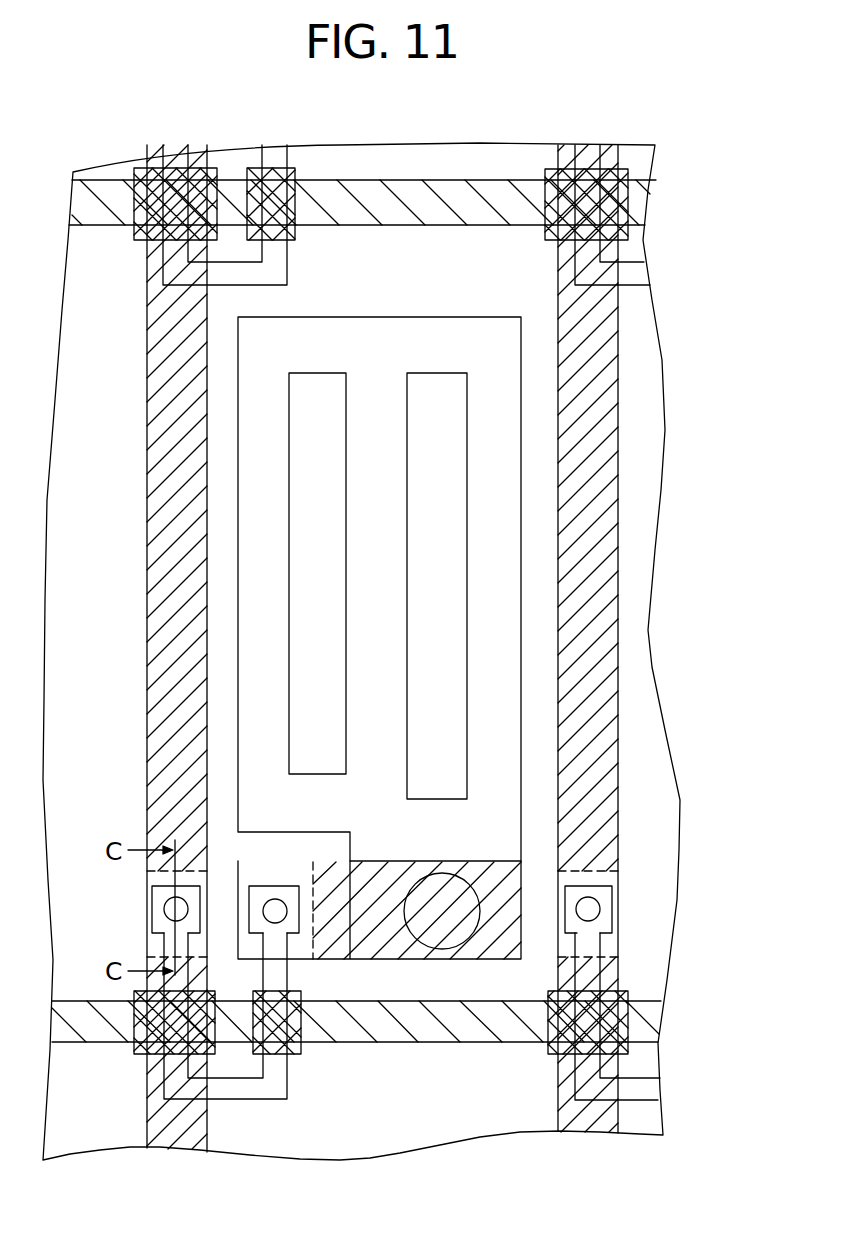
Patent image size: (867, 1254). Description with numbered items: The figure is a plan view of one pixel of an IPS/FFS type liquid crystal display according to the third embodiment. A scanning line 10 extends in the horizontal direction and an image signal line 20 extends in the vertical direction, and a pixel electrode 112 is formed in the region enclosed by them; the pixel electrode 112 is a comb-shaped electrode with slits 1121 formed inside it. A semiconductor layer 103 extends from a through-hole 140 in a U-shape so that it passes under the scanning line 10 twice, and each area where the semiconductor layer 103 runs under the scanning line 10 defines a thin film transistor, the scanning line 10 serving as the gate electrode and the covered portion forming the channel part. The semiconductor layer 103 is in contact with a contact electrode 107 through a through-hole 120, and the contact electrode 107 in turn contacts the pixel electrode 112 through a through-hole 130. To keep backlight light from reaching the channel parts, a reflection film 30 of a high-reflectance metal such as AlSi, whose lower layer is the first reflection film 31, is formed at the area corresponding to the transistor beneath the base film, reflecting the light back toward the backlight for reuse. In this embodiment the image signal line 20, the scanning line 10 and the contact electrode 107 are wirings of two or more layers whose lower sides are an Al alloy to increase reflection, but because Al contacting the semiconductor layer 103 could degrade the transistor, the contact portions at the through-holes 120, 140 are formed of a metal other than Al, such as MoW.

The scanning line 10 is at (498, 1022).
The image signal line 20 is at (598, 363).
The reflection film 30 is at (134, 1050).
The first reflection film 31 is at (411, 651).
The semiconductor layer 103 is at (254, 1093).
The contact electrode 107 is at (247, 959).
The pixel electrode 112 is at (505, 608).
The slit 1121 is at (448, 540).
The through-hole 120 is at (275, 900).
The through-hole 130 is at (440, 925).
The through-hole 140 is at (164, 908).